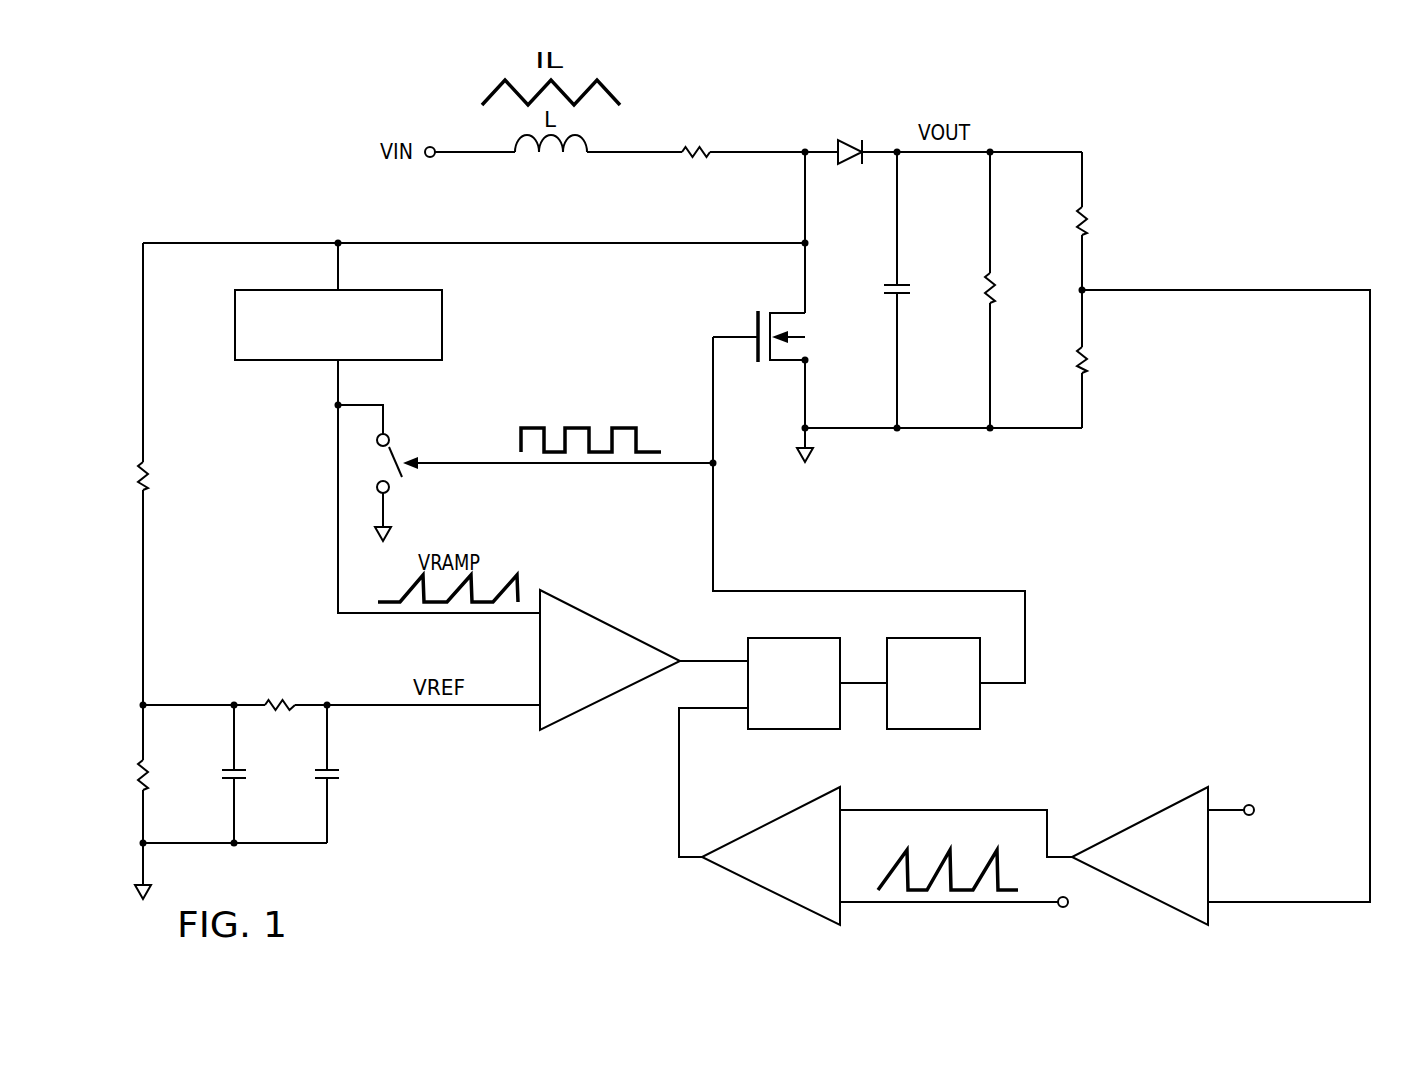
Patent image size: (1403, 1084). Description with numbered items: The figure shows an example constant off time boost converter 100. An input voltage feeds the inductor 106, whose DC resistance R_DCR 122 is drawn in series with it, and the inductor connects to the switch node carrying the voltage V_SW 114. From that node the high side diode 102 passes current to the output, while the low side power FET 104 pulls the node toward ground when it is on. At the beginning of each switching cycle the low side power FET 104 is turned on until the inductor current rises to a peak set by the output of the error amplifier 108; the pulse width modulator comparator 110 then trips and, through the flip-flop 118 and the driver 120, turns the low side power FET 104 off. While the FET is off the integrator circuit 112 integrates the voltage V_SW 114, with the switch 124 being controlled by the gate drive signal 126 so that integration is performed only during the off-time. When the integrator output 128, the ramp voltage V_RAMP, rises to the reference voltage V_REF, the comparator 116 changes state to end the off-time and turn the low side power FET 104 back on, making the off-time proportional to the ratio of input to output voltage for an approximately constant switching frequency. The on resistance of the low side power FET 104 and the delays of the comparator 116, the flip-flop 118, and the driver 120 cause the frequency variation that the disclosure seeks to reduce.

The constant off time boost converter 100 is at (212, 94).
The high side diode 102 is at (848, 142).
The low side power FET 104 is at (756, 325).
The inductor 106 is at (542, 135).
The error amplifier 108 is at (1140, 893).
The pulse width modulator (PWM) comparator 110 is at (770, 893).
The integrator circuit 112 is at (235, 327).
The voltage V_SW 114 is at (800, 156).
The comparator 116 is at (608, 698).
The flip-flop 118 is at (790, 731).
The driver 120 is at (935, 731).
The DC resistance R_DCR 122 is at (692, 158).
The switch 124 is at (395, 457).
The gate drive signal 126 is at (713, 518).
The integrator output 128 is at (338, 493).